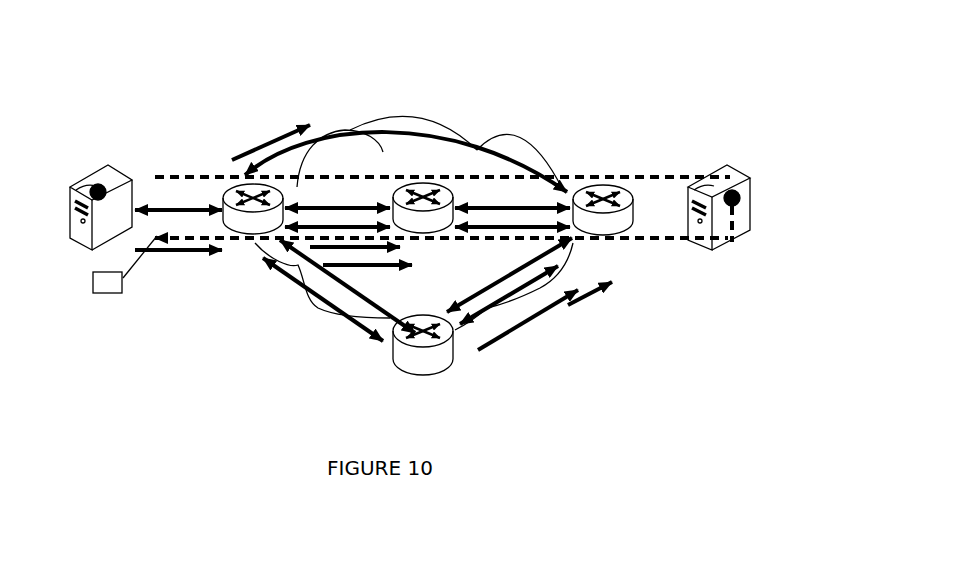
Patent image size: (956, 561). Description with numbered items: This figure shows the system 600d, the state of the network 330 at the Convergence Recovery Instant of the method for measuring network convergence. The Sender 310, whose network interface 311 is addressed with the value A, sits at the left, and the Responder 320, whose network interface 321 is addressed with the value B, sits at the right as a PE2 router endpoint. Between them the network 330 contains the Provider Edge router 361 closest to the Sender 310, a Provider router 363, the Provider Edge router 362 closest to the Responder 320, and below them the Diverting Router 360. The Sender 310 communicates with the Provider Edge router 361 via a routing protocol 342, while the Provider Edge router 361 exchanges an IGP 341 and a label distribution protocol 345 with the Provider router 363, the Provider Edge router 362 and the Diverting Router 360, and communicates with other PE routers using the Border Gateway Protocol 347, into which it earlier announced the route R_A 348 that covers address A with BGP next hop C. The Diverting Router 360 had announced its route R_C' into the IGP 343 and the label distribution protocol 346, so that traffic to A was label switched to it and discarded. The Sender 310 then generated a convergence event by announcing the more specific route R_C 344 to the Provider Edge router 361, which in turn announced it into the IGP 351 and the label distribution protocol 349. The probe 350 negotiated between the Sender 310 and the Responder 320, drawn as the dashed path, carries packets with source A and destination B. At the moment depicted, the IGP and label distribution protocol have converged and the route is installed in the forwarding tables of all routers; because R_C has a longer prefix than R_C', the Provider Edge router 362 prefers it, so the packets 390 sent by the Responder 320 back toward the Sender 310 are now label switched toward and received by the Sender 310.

The system 600d is at (108, 70).
The Sender 310 is at (72, 226).
The network interface 311 is at (86, 188).
The Responder 320 is at (755, 222).
The network interface 321 is at (745, 178).
The network 330 is at (414, 223).
The IGP 341 is at (426, 266).
The routing protocol 342 is at (178, 210).
The IGP 343 is at (589, 300).
The route R_C 344 is at (178, 249).
The label distribution protocol 345 is at (416, 280).
The label distribution protocol 346 is at (528, 320).
The Border Gateway Protocol 347 is at (406, 156).
The route R_A 348 is at (271, 142).
The label distribution protocol 349 is at (355, 247).
The probe 350 is at (442, 203).
The IGP 351 is at (367, 265).
The Diverting Router 360 is at (395, 362).
The Provider Edge router 361 is at (253, 209).
The Provider Edge router 362 is at (611, 197).
The Provider router 363 is at (423, 209).
The packets 390 is at (125, 264).